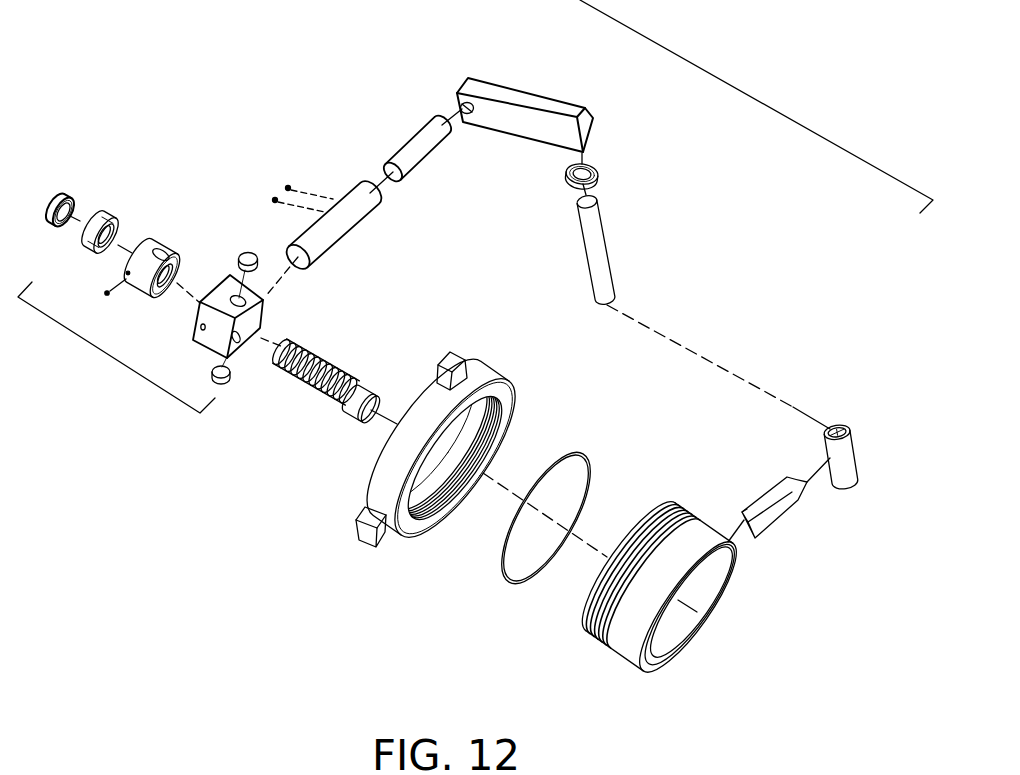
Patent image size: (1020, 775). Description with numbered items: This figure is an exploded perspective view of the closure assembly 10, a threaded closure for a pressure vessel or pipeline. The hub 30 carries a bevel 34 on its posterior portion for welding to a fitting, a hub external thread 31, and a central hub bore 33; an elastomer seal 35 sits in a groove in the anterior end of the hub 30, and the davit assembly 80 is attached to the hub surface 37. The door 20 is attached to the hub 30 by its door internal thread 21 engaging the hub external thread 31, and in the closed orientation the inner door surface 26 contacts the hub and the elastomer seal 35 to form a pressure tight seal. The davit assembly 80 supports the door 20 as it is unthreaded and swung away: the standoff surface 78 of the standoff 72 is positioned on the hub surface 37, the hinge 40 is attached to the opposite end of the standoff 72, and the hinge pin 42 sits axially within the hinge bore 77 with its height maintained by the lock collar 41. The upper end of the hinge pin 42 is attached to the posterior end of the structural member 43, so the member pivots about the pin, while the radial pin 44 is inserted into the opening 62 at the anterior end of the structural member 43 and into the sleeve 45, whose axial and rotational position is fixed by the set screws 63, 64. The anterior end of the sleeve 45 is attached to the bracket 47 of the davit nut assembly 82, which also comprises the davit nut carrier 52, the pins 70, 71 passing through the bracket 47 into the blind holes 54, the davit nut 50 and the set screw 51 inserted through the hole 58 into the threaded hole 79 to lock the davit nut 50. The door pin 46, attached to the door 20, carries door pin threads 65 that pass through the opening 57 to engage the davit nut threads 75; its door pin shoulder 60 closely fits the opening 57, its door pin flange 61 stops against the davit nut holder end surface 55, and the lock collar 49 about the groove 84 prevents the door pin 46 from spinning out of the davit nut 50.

The closure assembly 10 is at (243, 588).
The door 20 is at (466, 449).
The door internal thread 21 is at (512, 422).
The inner door surface 26 is at (505, 405).
The hub 30 is at (699, 587).
The hub external thread 31 is at (682, 506).
The hub bore 33 is at (712, 612).
The bevel 34 is at (658, 676).
The elastomer seal 35 is at (505, 582).
The hub surface 37 is at (697, 552).
The hinge 40 is at (855, 429).
The lock collar 41 is at (600, 176).
The hinge pin 42 is at (604, 247).
The structural member 43 is at (501, 104).
The radial pin 44 is at (408, 147).
The sleeve 45 is at (351, 195).
The door pin 46 is at (315, 373).
The bracket 47 is at (214, 301).
The lock collar 49 is at (57, 195).
The davit nut 50 is at (112, 206).
The set screw 51 is at (105, 295).
The davit nut carrier 52 is at (138, 275).
The blind holes 54 is at (160, 250).
The davit nut holder end surface 55 is at (157, 295).
The opening 57 is at (163, 297).
The hole 58 is at (197, 342).
The door pin shoulder 60 is at (320, 373).
The door pin flange 61 is at (366, 394).
The opening 62 is at (460, 108).
The set screw 63 is at (285, 186).
The set screw 64 is at (273, 199).
The door pin threads 65 is at (292, 362).
The pin 70 is at (232, 379).
The pin 71 is at (249, 253).
The standoff 72 is at (789, 532).
The davit nut threads 75 is at (110, 220).
The hinge bore 77 is at (836, 429).
The standoff surface 78 is at (750, 524).
The threaded hole 79 is at (126, 273).
The davit assembly 80 is at (670, 48).
The davit nut assembly 82 is at (107, 355).
The groove 84 is at (300, 358).